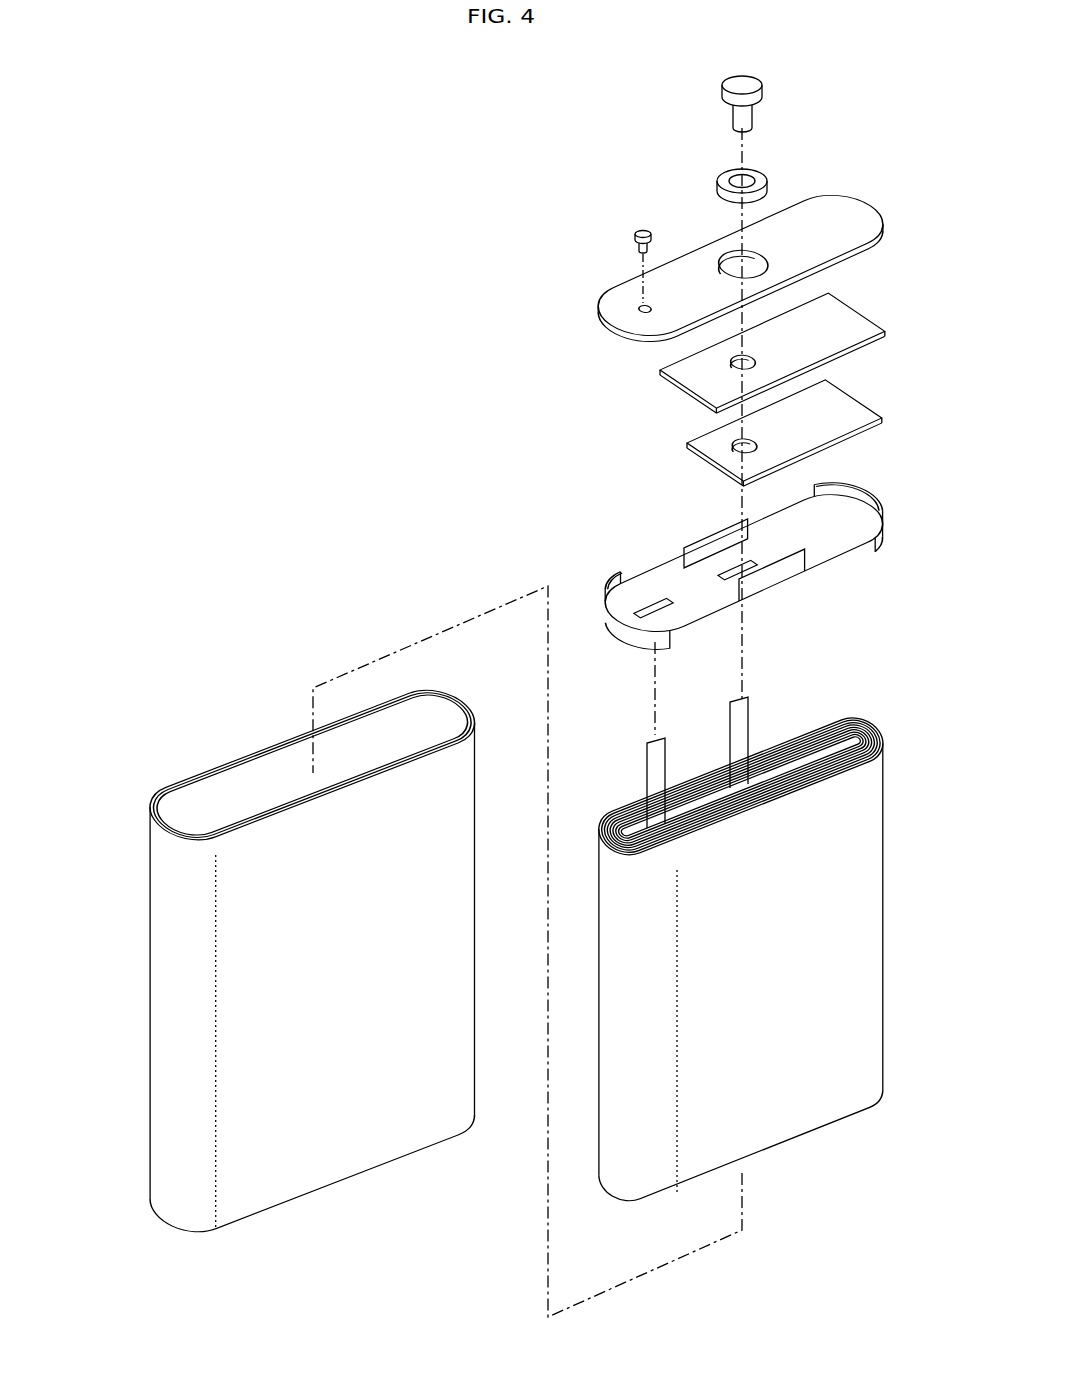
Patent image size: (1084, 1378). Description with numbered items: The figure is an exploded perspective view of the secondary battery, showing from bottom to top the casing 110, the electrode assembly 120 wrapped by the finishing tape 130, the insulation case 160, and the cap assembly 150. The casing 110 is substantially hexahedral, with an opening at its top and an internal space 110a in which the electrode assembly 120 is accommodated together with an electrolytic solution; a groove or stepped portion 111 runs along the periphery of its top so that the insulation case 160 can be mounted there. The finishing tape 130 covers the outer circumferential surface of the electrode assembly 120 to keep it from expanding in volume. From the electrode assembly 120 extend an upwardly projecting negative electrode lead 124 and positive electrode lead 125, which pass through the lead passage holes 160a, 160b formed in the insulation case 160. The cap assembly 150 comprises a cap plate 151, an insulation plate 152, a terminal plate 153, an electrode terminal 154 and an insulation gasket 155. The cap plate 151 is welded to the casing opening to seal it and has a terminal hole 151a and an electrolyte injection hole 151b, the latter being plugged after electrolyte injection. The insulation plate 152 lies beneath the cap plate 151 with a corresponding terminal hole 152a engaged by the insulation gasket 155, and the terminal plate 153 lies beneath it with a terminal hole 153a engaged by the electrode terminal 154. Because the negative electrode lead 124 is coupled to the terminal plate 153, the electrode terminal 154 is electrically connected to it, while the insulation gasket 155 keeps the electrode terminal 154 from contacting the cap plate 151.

The casing 110 is at (267, 959).
The internal space 110a is at (266, 790).
The groove 111 is at (205, 778).
The electrode assembly 120 is at (774, 924).
The negative electrode lead 124 is at (737, 700).
The positive electrode lead 125 is at (650, 745).
The finishing tape 130 is at (880, 931).
The cap assembly 150 is at (588, 287).
The cap plate 151 is at (744, 254).
The terminal hole 151a is at (735, 266).
The electrolyte injection hole 151b is at (641, 304).
The insulation plate 152 is at (746, 340).
The terminal hole 152a is at (742, 360).
The terminal plate 153 is at (757, 418).
The terminal hole 153a is at (742, 443).
The electrode terminal 154 is at (758, 84).
The insulation gasket 155 is at (760, 178).
The insulation case 160 is at (726, 565).
The lead passage hole 160a is at (730, 567).
The lead passage hole 160b is at (650, 605).